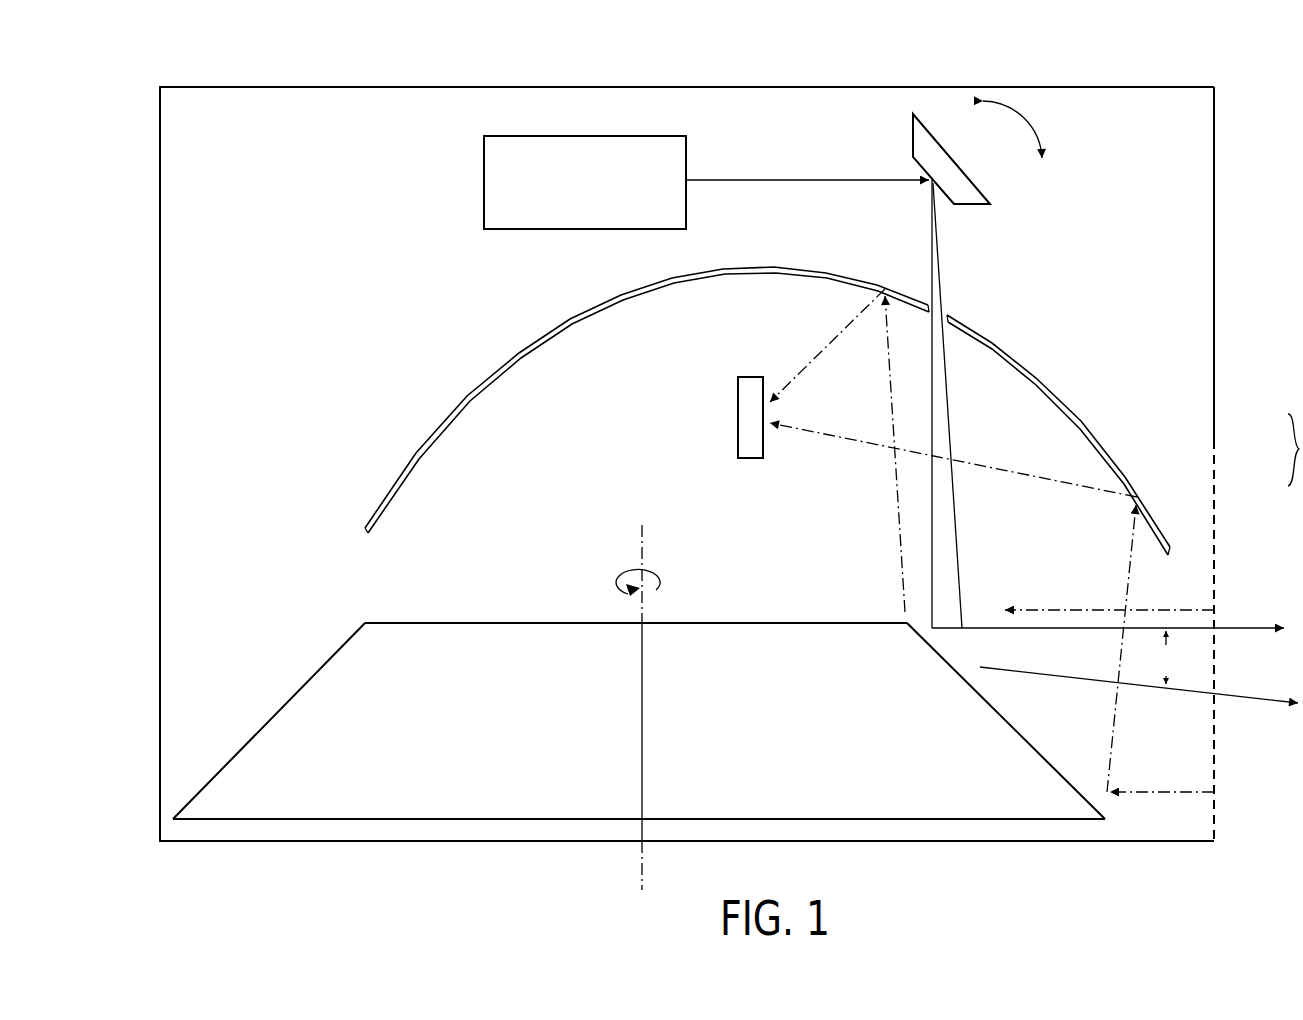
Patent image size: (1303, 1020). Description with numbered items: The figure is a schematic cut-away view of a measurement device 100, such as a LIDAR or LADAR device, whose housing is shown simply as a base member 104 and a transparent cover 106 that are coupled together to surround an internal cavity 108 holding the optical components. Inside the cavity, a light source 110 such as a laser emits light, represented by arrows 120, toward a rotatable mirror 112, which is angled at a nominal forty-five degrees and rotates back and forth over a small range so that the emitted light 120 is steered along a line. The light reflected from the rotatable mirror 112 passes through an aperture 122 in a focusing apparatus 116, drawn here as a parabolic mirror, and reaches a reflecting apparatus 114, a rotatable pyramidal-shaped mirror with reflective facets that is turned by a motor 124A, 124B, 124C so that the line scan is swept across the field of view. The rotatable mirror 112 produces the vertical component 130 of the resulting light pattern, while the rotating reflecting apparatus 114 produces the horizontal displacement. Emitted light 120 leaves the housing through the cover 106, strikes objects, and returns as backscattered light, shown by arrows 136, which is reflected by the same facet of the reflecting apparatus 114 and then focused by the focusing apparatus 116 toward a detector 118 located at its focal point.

The measurement device 100 is at (140, 96).
The base member 104 is at (1215, 442).
The cover 106 is at (1215, 486).
The internal cavity 108 is at (240, 198).
The light source 110 is at (597, 198).
The rotatable mirror 112 is at (950, 155).
The reflecting apparatus 114 is at (482, 622).
The focusing apparatus 116 is at (578, 325).
The detector 118 is at (750, 384).
The emitted light 120 is at (770, 176).
The aperture 122 is at (953, 315).
The motor 124A is at (1010, 723).
The motor 124B is at (782, 740).
The motor 124C is at (472, 750).
The vertical component 130 is at (1163, 657).
The backscattered light 136 is at (1060, 606).